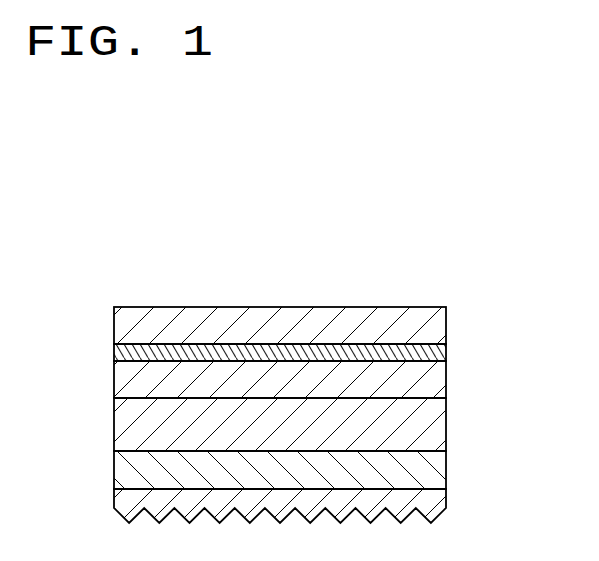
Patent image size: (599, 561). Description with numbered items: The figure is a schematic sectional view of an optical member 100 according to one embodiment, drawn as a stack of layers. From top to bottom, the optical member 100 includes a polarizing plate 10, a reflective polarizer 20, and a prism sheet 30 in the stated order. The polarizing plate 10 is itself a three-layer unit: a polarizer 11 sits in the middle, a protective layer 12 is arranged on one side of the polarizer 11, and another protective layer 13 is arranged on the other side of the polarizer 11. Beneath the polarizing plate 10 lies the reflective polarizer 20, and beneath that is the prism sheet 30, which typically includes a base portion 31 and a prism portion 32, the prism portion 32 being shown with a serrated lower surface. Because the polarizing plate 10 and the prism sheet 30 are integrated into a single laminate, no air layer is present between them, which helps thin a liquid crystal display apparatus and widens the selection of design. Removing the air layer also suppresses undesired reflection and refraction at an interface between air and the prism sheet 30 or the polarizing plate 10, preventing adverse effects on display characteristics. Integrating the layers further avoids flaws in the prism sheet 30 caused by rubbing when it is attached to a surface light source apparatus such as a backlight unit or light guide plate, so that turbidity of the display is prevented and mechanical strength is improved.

The optical member 100 is at (480, 261).
The polarizing plate 10 is at (342, 352).
The protective layer 12 is at (446, 324).
The polarizer 11 is at (446, 352).
The protective layer 13 is at (323, 379).
The reflective polarizer 20 is at (446, 425).
The prism sheet 30 is at (342, 486).
The base portion 31 is at (446, 467).
The prism portion 32 is at (322, 506).